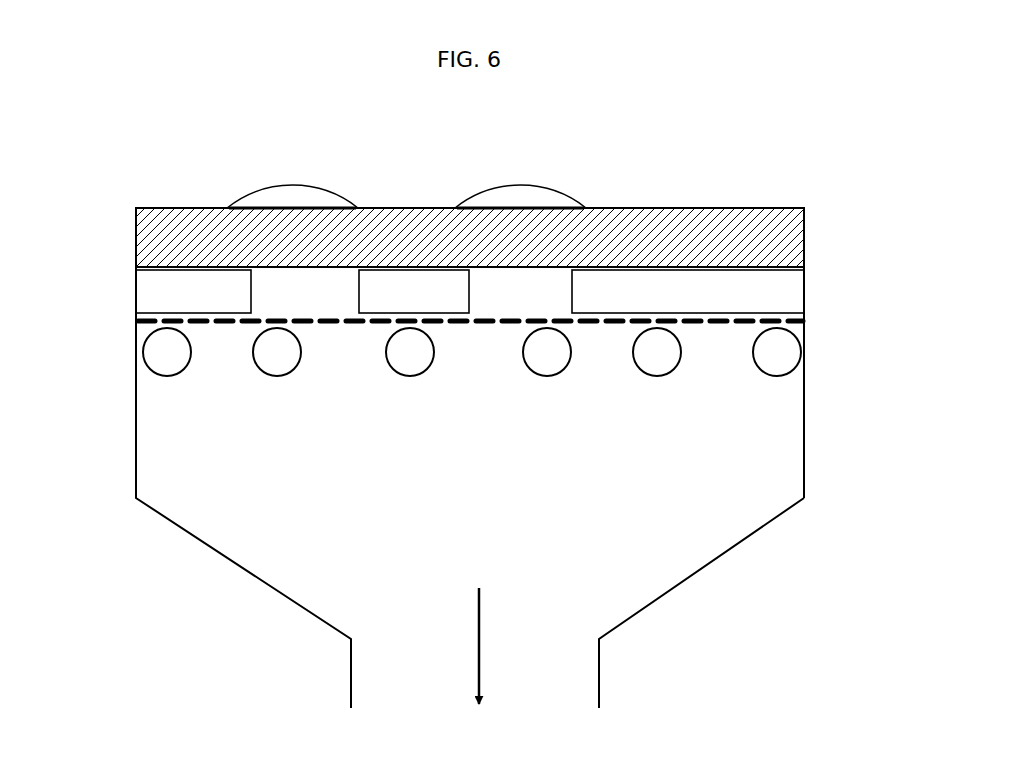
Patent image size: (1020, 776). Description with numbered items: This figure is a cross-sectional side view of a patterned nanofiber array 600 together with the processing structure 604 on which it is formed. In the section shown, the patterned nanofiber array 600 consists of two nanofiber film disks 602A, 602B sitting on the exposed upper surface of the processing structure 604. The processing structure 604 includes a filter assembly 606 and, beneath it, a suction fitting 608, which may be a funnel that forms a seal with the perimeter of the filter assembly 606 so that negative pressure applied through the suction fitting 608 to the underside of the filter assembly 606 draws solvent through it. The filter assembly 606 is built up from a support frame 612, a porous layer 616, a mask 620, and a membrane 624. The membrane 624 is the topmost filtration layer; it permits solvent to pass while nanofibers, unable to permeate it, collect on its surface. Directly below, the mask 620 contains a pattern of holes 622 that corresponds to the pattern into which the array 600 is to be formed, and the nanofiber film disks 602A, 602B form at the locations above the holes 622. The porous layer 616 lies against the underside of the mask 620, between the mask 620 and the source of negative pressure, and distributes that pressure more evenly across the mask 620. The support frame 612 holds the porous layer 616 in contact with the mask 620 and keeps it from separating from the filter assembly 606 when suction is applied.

The patterned nanofiber array 600 is at (607, 184).
The nanofiber film disk 602A is at (330, 187).
The nanofiber film disk 602B is at (513, 187).
The processing structure 604 is at (517, 458).
The filter assembly 606 is at (123, 203).
The suction fitting 608 is at (743, 542).
The support frame 612 is at (822, 351).
The porous layer 616 is at (786, 321).
The mask 620 is at (805, 280).
The holes 622 is at (314, 297).
The membrane 624 is at (805, 223).